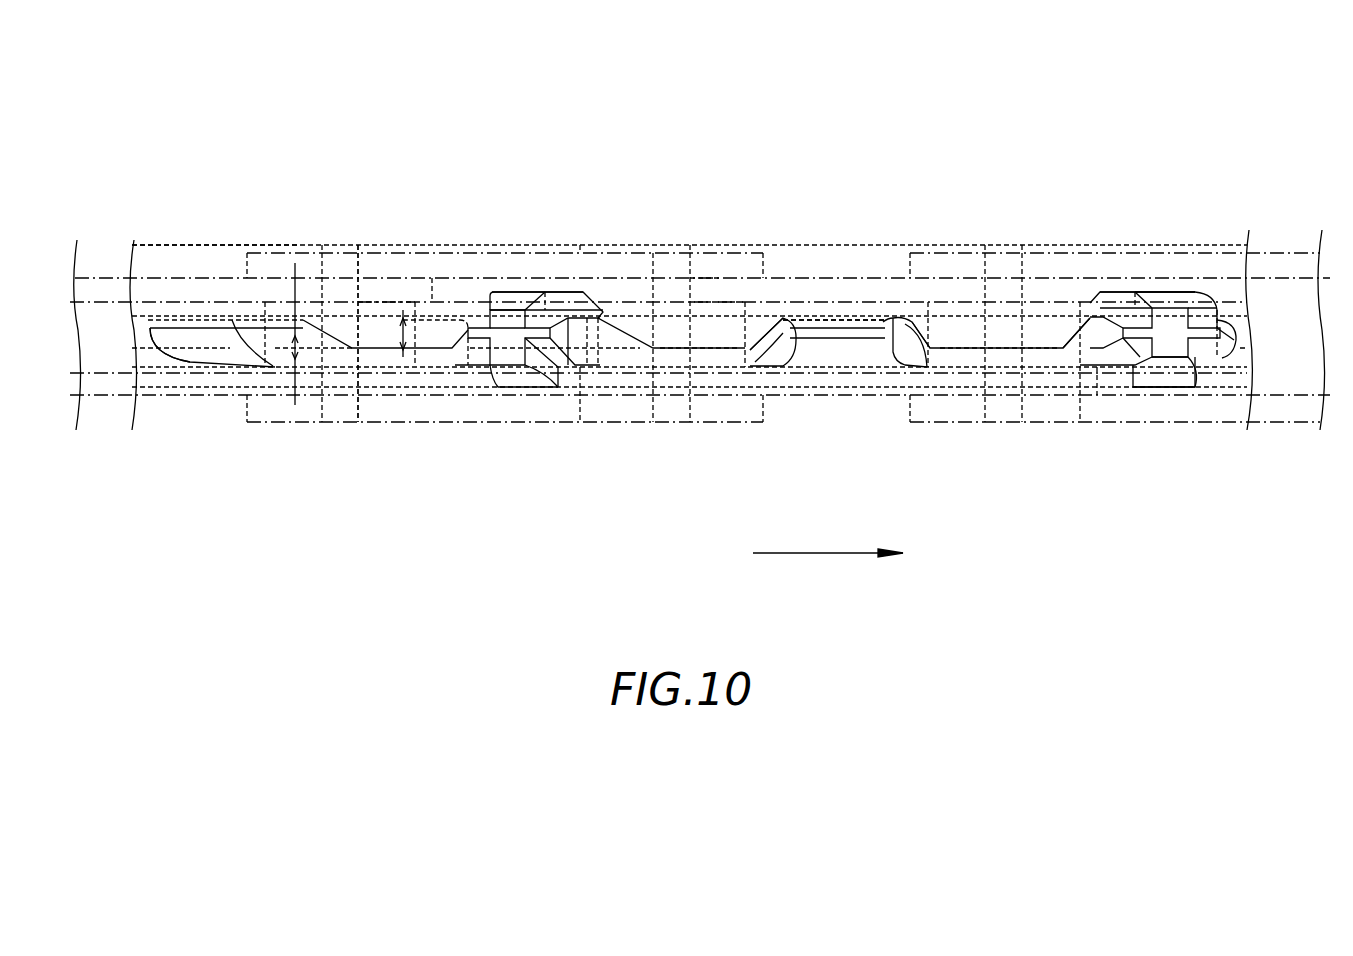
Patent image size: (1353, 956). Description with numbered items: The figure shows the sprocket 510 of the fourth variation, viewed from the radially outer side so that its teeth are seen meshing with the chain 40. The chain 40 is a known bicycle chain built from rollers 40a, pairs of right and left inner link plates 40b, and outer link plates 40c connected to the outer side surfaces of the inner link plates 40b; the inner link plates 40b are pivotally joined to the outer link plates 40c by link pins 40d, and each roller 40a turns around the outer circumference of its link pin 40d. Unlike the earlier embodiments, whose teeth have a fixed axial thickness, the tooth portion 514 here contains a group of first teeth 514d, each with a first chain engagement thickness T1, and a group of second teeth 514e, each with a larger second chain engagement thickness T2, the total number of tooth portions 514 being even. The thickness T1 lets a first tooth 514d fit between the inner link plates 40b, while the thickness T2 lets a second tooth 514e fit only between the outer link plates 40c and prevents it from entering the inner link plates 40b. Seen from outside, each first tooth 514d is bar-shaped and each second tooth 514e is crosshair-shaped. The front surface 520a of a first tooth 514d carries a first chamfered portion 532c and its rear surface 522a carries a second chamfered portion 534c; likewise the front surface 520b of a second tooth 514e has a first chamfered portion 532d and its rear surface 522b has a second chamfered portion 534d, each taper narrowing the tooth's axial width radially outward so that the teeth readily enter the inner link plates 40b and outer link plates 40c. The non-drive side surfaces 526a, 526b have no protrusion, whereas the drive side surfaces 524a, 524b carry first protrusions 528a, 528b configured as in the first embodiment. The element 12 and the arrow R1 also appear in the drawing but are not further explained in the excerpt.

The shaft 12 is at (713, 313).
The chain 40 is at (610, 245).
The rollers 40a is at (417, 363).
The inner link plates 40b is at (360, 265).
The outer link plates 40c is at (578, 245).
The link pins 40d is at (360, 297).
The sprocket 510 is at (680, 302).
The tooth portion 514 is at (318, 288).
The first teeth 514d is at (203, 298).
The second teeth 514e is at (507, 280).
The front surface 520a is at (823, 373).
The front surface 520b is at (1148, 393).
The rear surface 522a is at (802, 310).
The rear surface 522b is at (1147, 283).
The drive side surface 524a is at (918, 352).
The drive side surface 524b is at (1222, 327).
The non-drive side surface 526a is at (753, 363).
The non-drive side surface 526b is at (1080, 357).
The first protrusion 528a is at (953, 343).
The first protrusion 528b is at (1222, 350).
The first chamfered portion 532c is at (852, 350).
The first chamfered portion 532d is at (1175, 373).
The second chamfered portion 534c is at (868, 322).
The second chamfered portion 534d is at (1150, 292).
The first chain engagement thickness T1 is at (314, 334).
The second chain engagement thickness T2 is at (428, 333).
The rotation direction R1 is at (828, 536).